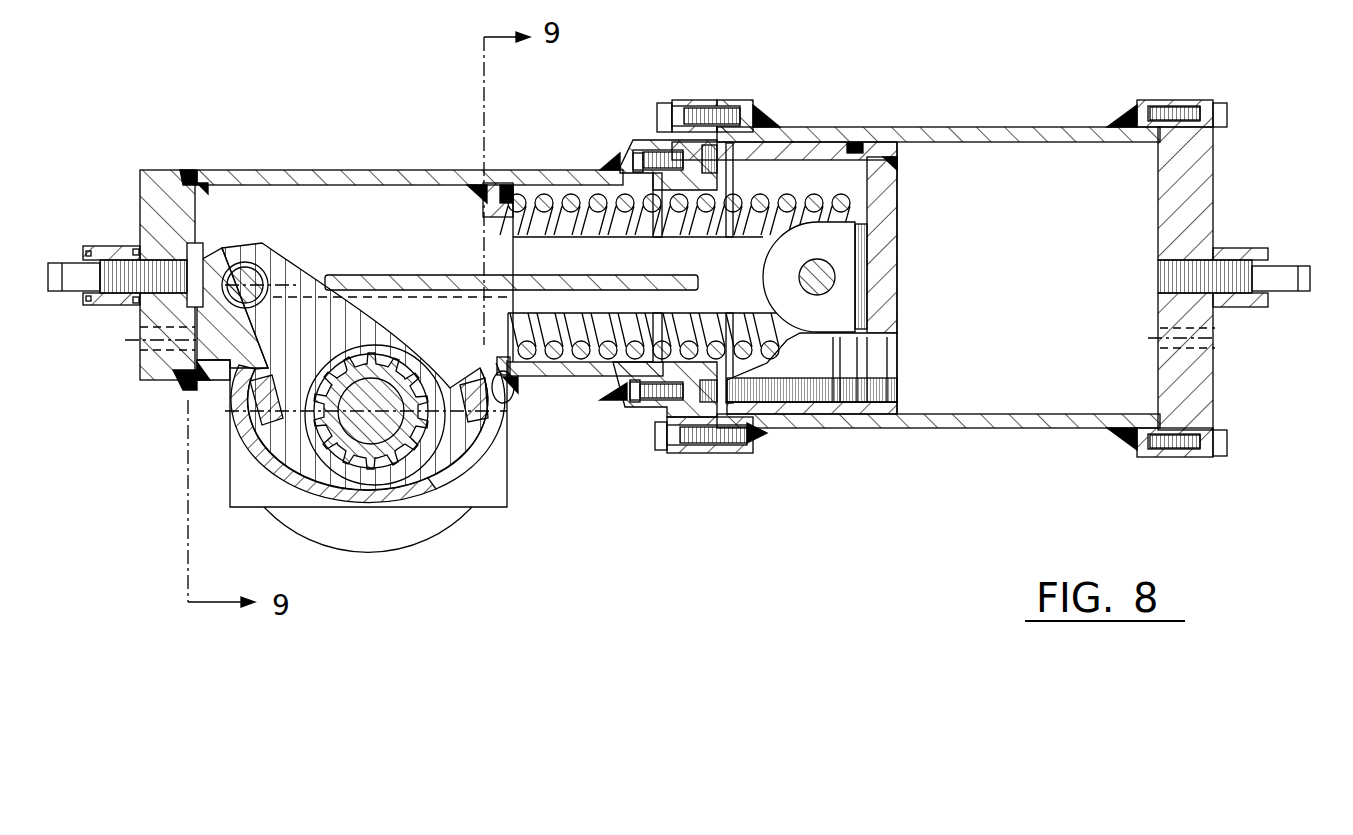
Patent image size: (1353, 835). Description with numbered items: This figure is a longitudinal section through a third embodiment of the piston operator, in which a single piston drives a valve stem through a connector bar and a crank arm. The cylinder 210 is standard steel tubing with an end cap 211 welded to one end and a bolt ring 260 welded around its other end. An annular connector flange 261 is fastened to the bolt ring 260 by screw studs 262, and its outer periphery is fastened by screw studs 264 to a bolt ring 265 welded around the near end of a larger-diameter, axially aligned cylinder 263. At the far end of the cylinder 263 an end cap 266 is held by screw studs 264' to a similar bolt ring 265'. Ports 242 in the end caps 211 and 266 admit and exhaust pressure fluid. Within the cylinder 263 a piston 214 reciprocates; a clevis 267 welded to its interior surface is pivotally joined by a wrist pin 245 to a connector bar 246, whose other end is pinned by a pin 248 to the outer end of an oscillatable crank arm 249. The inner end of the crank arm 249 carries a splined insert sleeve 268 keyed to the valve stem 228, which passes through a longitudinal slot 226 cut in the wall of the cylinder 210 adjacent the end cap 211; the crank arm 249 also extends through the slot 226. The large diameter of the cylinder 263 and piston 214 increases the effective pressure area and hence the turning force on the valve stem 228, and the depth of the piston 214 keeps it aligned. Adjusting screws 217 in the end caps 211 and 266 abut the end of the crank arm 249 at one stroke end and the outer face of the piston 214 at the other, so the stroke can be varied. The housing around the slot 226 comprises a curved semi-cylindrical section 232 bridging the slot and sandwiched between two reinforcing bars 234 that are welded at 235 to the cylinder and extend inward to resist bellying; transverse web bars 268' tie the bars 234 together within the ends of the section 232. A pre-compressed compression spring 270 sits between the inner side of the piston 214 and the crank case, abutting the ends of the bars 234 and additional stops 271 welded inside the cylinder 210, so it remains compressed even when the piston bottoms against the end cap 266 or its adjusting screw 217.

The cylinder 210 is at (372, 160).
The end cap 211 is at (150, 207).
The adjusting screw 217 is at (72, 270).
The port 242 is at (140, 350).
The weldment 235 is at (225, 383).
The pin 248 is at (240, 277).
The crank arm 249 is at (283, 280).
The connector bar 246 is at (428, 250).
The stop 271 is at (490, 193).
The bolt ring 260 is at (637, 147).
The screw stud 262 is at (657, 157).
The connector flange 261 is at (682, 103).
The bolt ring 265 is at (754, 92).
The screw stud 264 is at (671, 271).
The cylinder 263 is at (945, 115).
The end cap 266 is at (1200, 190).
The bolt ring 265' is at (1158, 90).
The screw stud 264' is at (1205, 272).
The piston 214 is at (893, 302).
The compression spring 270 is at (790, 198).
The clevis 267 is at (845, 236).
The wrist pin 245 is at (830, 272).
The curved section 232 is at (412, 490).
The reinforcing bar 234 is at (500, 490).
The splined insert sleeve 268 is at (390, 396).
The valve stem 228 is at (357, 430).
The transverse web bar 268' is at (295, 416).
The longitudinal slot 226 is at (508, 398).